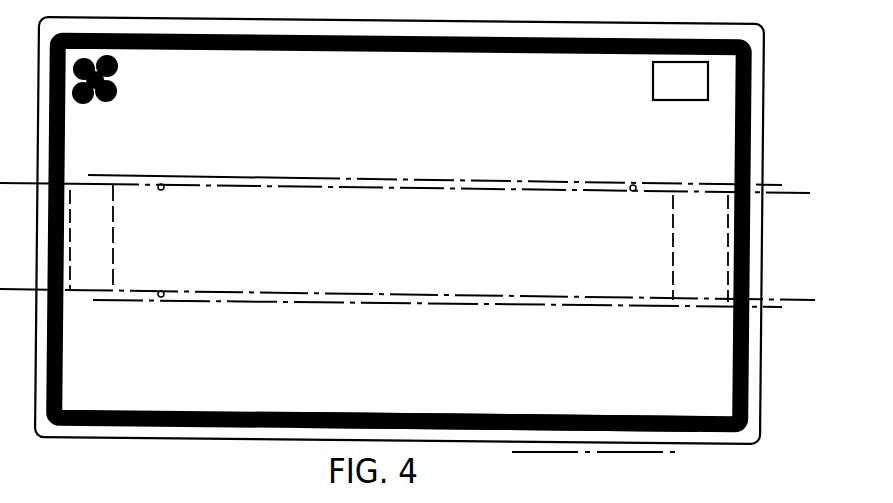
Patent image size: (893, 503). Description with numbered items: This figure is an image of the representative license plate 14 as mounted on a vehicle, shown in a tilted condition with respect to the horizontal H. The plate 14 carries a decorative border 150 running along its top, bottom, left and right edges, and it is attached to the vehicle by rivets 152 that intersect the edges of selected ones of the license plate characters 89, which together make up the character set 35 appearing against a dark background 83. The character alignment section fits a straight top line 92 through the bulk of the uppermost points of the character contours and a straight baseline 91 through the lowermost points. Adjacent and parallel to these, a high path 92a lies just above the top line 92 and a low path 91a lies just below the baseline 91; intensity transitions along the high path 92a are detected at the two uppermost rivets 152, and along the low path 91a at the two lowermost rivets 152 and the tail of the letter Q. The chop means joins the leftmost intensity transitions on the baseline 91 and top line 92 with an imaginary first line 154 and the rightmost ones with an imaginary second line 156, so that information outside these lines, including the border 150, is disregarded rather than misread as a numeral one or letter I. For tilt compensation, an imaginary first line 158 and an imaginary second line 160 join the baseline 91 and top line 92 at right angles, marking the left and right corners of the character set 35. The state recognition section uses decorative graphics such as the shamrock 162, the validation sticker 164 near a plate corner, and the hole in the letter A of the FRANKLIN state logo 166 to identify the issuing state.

The license plate 14 is at (424, 238).
The decorative border 150 is at (746, 256).
The dark background 83 is at (517, 404).
The shamrock 162 is at (108, 92).
The state logo 166 is at (418, 98).
The validation sticker 164 is at (653, 83).
The high path 92a is at (782, 184).
The top line 92 is at (788, 200).
The baseline 91 is at (790, 277).
The low path 91a is at (768, 309).
The imaginary first line 154 is at (70, 268).
The imaginary first line 158 is at (114, 220).
The imaginary second line 160 is at (675, 218).
The imaginary second line 156 is at (728, 281).
The character set 35 is at (680, 265).
The license plate characters 89 is at (405, 297).
The rivets 152 is at (162, 185).
The horizontal H is at (611, 452).